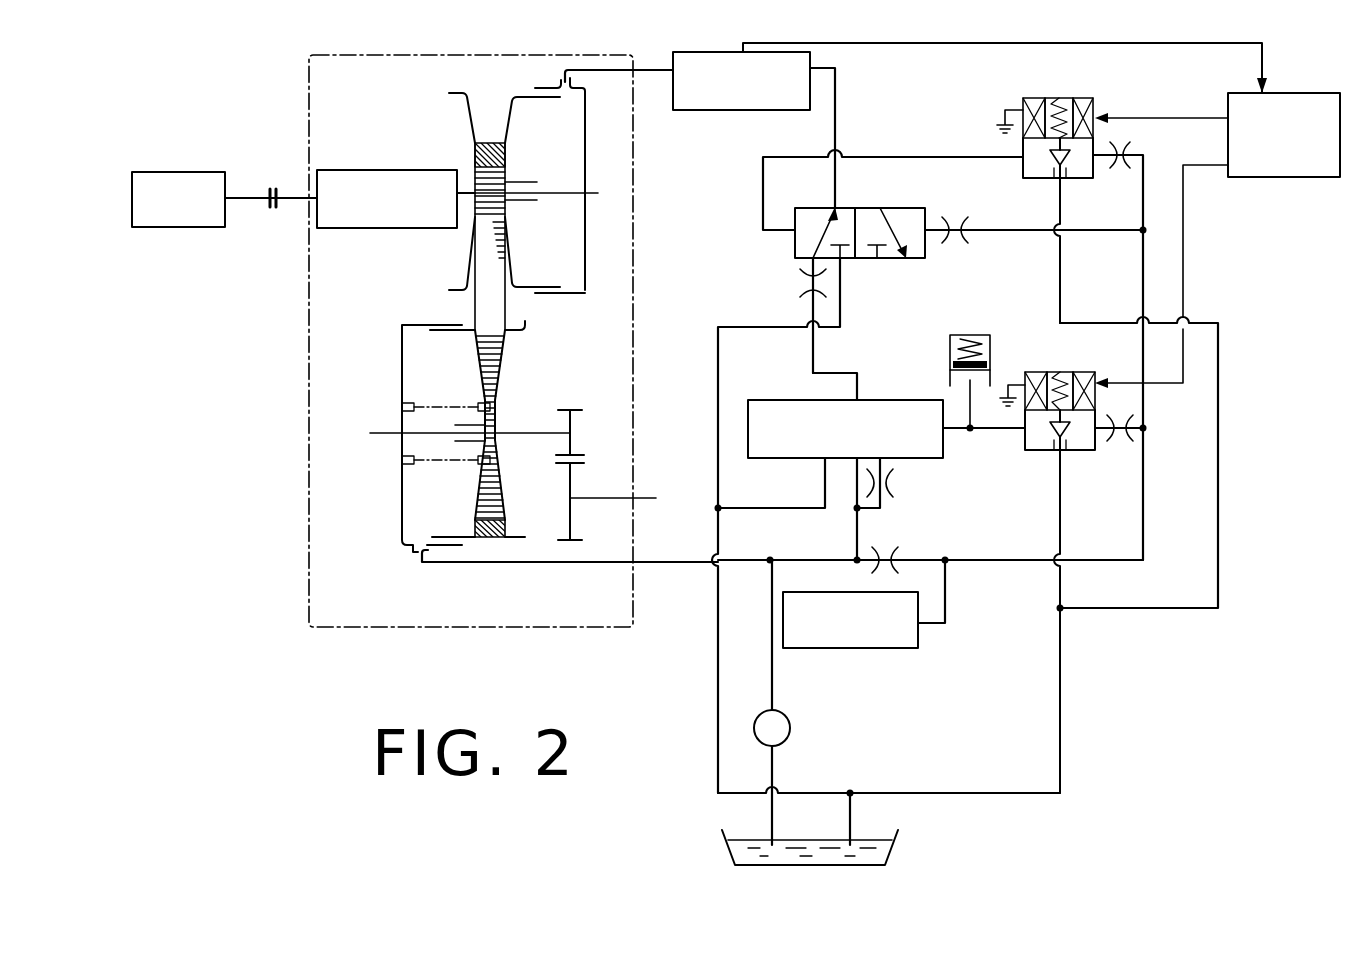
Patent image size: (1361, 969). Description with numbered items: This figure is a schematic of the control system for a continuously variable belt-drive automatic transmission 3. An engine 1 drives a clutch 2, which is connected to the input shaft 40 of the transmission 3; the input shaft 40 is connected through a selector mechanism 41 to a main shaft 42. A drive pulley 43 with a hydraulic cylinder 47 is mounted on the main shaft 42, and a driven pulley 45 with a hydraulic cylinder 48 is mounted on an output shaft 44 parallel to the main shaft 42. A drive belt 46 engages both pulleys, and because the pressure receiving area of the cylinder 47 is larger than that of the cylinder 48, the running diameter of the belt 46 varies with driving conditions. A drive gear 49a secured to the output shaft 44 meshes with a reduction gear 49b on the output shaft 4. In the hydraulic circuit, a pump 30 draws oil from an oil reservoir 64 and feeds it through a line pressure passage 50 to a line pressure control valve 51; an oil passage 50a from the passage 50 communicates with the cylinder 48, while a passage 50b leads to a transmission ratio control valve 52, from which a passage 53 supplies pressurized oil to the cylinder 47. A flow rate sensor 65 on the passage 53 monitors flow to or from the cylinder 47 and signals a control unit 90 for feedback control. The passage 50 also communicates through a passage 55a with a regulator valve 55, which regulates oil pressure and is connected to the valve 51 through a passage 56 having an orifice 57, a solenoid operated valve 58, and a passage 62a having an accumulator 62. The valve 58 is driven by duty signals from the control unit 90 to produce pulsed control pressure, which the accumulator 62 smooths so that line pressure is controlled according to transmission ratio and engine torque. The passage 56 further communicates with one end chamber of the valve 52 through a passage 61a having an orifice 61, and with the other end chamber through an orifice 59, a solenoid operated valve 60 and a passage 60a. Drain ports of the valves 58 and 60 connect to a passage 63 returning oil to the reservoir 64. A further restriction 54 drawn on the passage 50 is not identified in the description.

The engine 1 is at (200, 172).
The clutch 2 is at (272, 190).
The continuously variable belt-drive automatic transmission 3 is at (523, 55).
The output shaft 4 is at (649, 498).
The oil pump 30 is at (790, 733).
The input shaft 40 is at (298, 192).
The selector mechanism 41 is at (373, 171).
The main shaft 42 is at (463, 226).
The drive pulley 43 is at (465, 118).
The output shaft 44 is at (530, 432).
The driven pulley 45 is at (510, 333).
The drive belt 46 is at (498, 535).
The hydraulic cylinder 47 is at (565, 157).
The hydraulic cylinder 48 is at (408, 352).
The drive gear 49a is at (592, 432).
The reduction gear 49b is at (570, 522).
The line pressure passage 50 is at (803, 558).
The oil passage 50a is at (646, 562).
The passage 50b is at (816, 357).
The line pressure control valve 51 is at (917, 458).
The transmission ratio control valve 52 is at (895, 260).
The passage 53 is at (668, 70).
The orifice 54 is at (889, 548).
The regulator valve 55 is at (880, 648).
The passage 55a is at (946, 598).
The passage 56 is at (1005, 556).
The orifice 57 is at (1118, 437).
The solenoid operated valve 58 is at (1030, 372).
The orifice 59 is at (1122, 166).
The solenoid operated valve 60 is at (1045, 98).
The passage 60a is at (883, 157).
The orifice 61 is at (958, 245).
The passage 61a is at (1003, 230).
The accumulator 62 is at (978, 335).
The passage 62a is at (968, 432).
The passage 63 is at (716, 718).
The oil reservoir 64 is at (900, 840).
The flow rate sensor 65 is at (703, 110).
The control unit 90 is at (1310, 93).